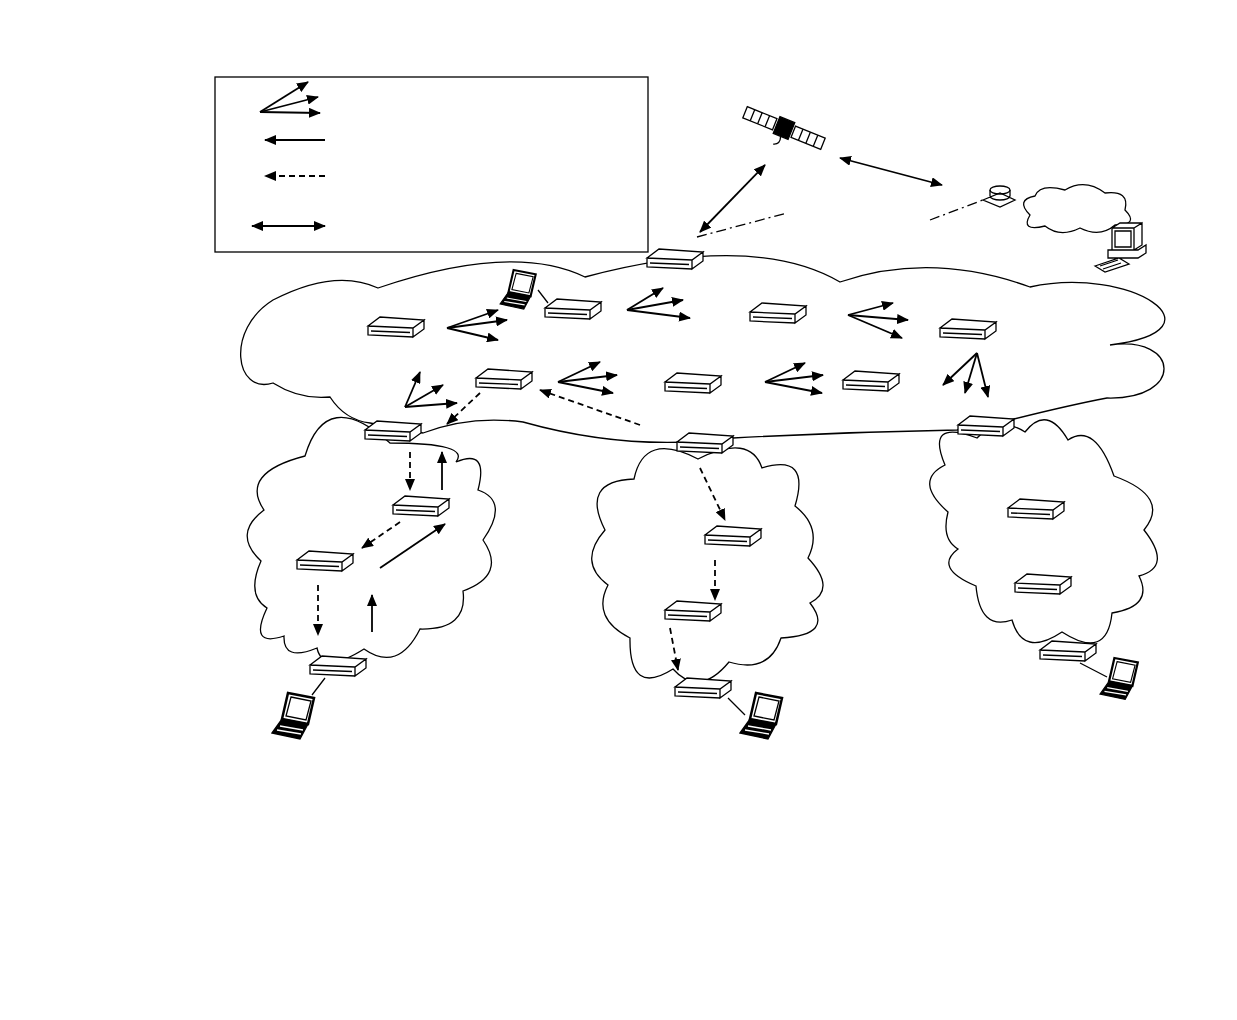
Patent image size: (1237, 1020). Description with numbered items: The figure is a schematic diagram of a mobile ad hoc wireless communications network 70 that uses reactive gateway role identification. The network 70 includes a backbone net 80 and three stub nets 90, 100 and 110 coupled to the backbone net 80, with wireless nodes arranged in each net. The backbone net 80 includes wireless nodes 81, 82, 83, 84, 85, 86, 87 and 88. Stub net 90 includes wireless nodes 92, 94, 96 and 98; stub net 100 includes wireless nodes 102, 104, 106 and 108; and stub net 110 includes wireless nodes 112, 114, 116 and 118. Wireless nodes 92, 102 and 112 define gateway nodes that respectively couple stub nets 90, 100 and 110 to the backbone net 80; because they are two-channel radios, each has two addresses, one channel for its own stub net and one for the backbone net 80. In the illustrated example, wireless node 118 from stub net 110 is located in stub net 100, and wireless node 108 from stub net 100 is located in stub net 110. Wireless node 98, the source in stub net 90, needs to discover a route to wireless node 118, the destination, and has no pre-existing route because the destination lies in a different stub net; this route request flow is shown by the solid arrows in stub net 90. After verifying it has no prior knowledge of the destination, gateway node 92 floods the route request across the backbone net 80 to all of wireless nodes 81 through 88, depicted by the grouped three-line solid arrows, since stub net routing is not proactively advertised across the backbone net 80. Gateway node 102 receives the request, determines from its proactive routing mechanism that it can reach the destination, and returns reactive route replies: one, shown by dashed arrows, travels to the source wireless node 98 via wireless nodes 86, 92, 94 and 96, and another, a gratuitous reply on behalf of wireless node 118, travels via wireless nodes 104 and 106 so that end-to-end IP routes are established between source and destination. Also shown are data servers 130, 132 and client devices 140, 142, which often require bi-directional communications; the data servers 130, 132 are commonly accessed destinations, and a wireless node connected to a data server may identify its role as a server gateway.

The mobile ad hoc wireless communications network 70 is at (1035, 98).
The backbone net 80 is at (1167, 370).
The wireless node 81 is at (668, 250).
The wireless node 82 is at (590, 298).
The wireless node 83 is at (750, 312).
The wireless node 84 is at (947, 318).
The wireless node 85 is at (368, 328).
The wireless node 86 is at (482, 372).
The wireless node 87 is at (703, 396).
The wireless node 88 is at (853, 391).
The stub net 90 is at (245, 623).
The gateway node 92 is at (370, 425).
The wireless node 94 is at (445, 505).
The wireless node 96 is at (297, 560).
The wireless node 98 is at (310, 670).
The stub net 100 is at (800, 635).
The gateway node 102 is at (730, 440).
The wireless node 104 is at (760, 535).
The wireless node 106 is at (720, 610).
The wireless node 108 is at (1098, 650).
The stub net 110 is at (1155, 560).
The gateway node 112 is at (1013, 425).
The wireless node 114 is at (1063, 510).
The wireless node 116 is at (1073, 580).
The wireless node 118 is at (675, 690).
The data server 130 is at (1100, 695).
The data server 132 is at (500, 295).
The client device 140 is at (745, 722).
The client device 142 is at (280, 720).